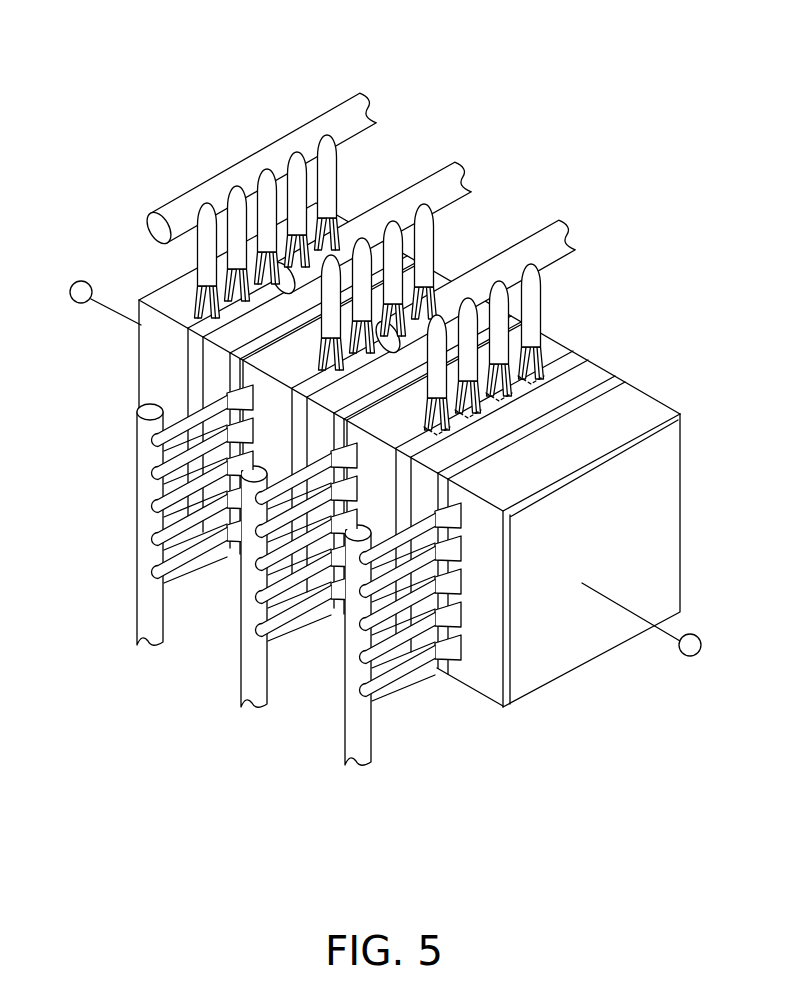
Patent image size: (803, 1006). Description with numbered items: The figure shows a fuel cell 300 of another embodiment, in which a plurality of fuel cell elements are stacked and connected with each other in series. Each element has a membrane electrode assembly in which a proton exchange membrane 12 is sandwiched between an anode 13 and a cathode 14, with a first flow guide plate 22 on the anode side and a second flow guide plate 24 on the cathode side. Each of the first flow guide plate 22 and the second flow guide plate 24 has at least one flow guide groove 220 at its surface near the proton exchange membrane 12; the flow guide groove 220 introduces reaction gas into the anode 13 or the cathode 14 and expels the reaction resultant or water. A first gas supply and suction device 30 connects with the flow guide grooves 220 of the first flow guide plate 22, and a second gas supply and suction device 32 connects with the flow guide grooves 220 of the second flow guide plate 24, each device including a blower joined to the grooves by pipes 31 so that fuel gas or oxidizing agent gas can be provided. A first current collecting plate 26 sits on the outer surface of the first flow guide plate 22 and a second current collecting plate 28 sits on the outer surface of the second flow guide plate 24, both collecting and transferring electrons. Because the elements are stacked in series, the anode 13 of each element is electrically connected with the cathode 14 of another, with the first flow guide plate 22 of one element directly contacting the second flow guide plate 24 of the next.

The fuel cell 300 is at (396, 47).
The first gas supply and suction device 30 is at (541, 240).
The flow guide groove 220 is at (540, 336).
The first flow guide plate 22 is at (552, 358).
The anode 13 is at (593, 375).
The proton exchange membrane 12 is at (612, 385).
The cathode 14 is at (622, 397).
The second flow guide plate 24 is at (633, 403).
The second current collecting plate 28 is at (648, 513).
The first current collecting plate 26 is at (139, 352).
The pipes 31 is at (413, 672).
The second gas supply and suction device 32 is at (356, 722).